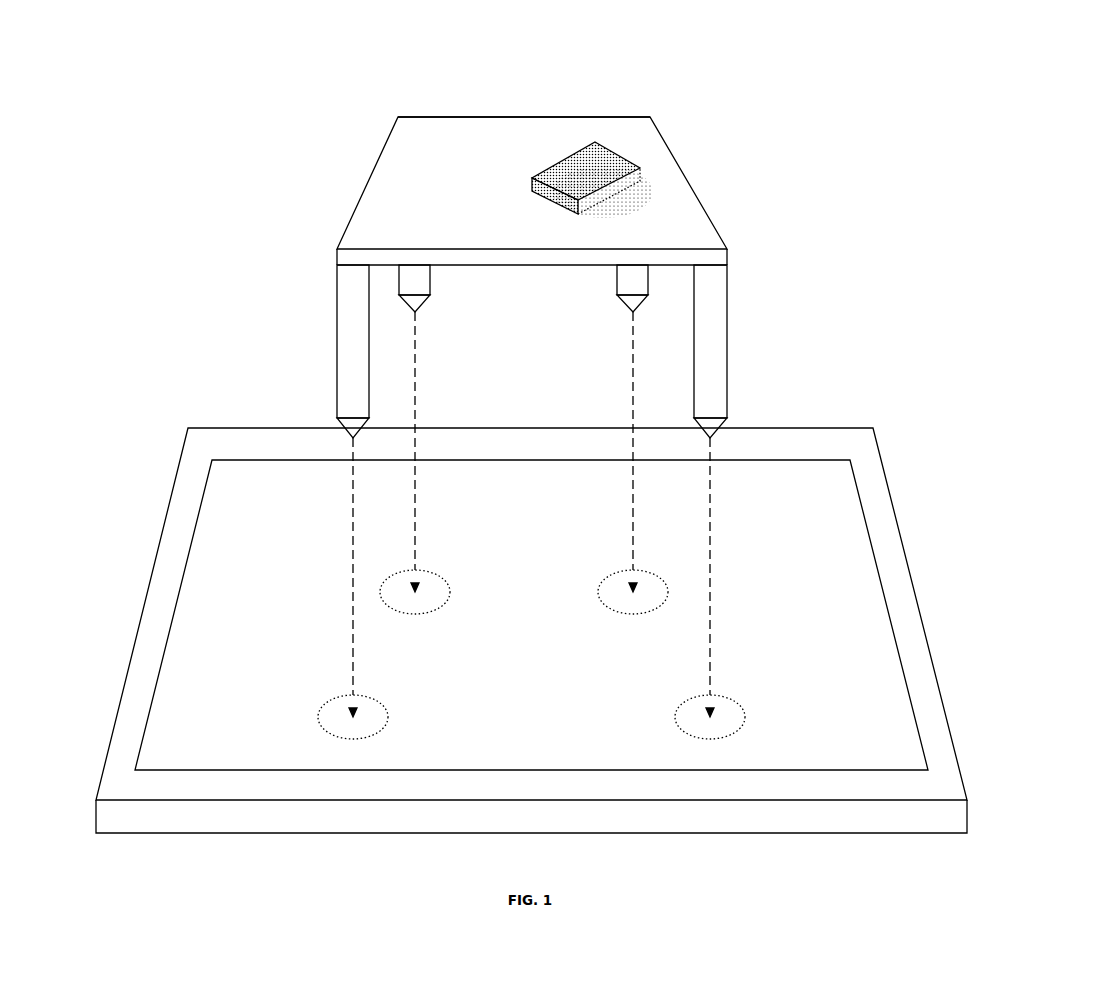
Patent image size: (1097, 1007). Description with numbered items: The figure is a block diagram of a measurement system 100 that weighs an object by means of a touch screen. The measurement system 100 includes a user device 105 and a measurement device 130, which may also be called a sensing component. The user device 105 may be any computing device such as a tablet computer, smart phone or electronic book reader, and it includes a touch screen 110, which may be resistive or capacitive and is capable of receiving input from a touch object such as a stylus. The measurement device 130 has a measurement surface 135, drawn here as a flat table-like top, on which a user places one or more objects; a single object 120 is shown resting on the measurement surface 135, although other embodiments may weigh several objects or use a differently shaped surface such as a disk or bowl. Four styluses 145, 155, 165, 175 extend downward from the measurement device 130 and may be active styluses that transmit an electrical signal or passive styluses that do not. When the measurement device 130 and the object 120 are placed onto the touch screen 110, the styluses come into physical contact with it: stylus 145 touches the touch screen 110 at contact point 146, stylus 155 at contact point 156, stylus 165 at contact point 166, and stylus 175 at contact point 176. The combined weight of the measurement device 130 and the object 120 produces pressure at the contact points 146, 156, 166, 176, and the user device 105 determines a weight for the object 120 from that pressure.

The measurement system 100 is at (906, 138).
The user device 105 is at (893, 500).
The touch screen 110 is at (902, 660).
The object 120 is at (640, 167).
The measurement device 130 is at (352, 144).
The measurement surface 135 is at (388, 218).
The stylus 145 is at (337, 335).
The contact point 146 is at (318, 715).
The stylus 155 is at (430, 290).
The contact point 156 is at (418, 615).
The stylus 165 is at (617, 290).
The contact point 166 is at (630, 615).
The stylus 175 is at (727, 302).
The contact point 176 is at (745, 716).